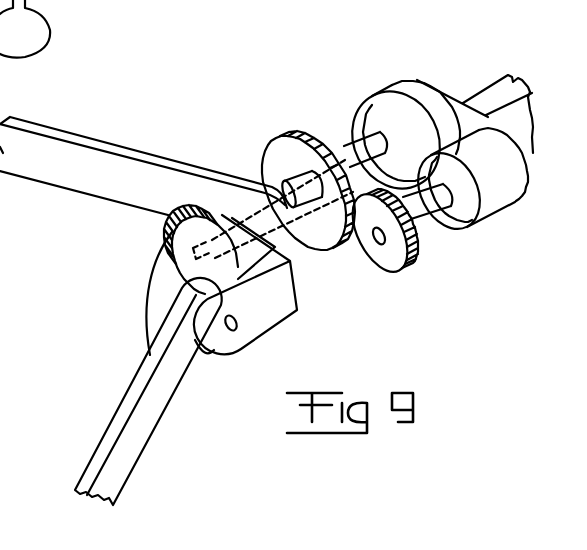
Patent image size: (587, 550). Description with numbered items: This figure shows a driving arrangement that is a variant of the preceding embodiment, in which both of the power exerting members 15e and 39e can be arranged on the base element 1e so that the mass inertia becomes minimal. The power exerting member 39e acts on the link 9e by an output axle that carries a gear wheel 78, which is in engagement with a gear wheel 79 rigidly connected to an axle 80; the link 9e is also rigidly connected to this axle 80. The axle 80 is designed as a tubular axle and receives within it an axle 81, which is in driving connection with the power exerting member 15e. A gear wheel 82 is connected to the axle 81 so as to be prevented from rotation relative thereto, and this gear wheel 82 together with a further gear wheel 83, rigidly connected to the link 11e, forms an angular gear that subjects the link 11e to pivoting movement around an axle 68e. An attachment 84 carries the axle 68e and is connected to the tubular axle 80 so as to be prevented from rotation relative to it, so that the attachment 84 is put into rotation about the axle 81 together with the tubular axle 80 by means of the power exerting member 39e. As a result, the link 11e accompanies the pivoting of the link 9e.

The base element 1e is at (493, 90).
The link 9e is at (94, 168).
The link 11e is at (165, 392).
The power exerting member 15e is at (397, 103).
The power exerting member 39e is at (493, 205).
The axle 68e is at (233, 326).
The gear wheel 78 is at (388, 263).
The gear wheel 79 is at (296, 154).
The axle 80 is at (291, 162).
The axle 81 is at (360, 163).
The gear wheel 82 is at (170, 227).
The gear wheel 83 is at (163, 302).
The attachment 84 is at (278, 300).